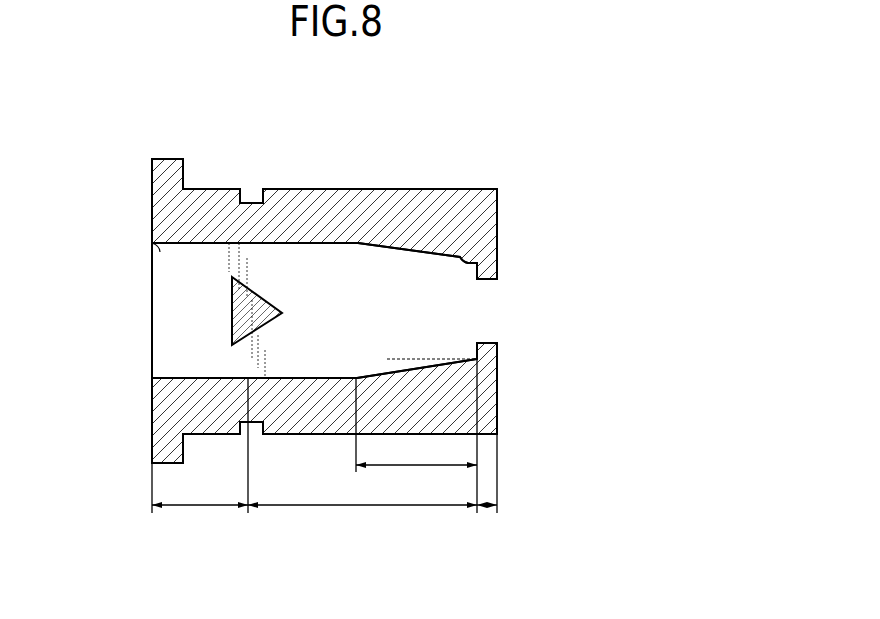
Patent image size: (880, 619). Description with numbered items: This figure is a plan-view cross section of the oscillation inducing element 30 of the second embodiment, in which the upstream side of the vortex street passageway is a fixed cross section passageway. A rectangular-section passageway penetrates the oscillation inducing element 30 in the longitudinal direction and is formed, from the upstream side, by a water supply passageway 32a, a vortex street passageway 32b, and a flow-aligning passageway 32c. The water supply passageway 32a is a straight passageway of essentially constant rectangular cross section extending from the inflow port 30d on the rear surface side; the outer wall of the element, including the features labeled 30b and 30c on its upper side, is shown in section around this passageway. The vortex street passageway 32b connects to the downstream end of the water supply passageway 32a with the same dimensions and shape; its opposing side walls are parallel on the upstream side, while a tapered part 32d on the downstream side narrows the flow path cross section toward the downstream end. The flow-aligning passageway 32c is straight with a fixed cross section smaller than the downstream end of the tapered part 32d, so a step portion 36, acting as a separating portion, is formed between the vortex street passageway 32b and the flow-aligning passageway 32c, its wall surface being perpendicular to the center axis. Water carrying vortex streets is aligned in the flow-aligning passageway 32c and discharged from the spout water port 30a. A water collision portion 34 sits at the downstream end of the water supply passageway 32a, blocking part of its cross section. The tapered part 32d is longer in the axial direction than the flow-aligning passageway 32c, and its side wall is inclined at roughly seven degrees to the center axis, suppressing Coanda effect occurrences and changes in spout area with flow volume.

The oscillation inducing element 30 is at (517, 150).
The spout water port 30a is at (488, 343).
The flange 30b is at (168, 158).
The groove 30c is at (254, 188).
The inflow port 30d is at (150, 257).
The water supply passageway 32a is at (200, 506).
The vortex street passageway 32b is at (362, 506).
The flow-aligning passageway 32c is at (487, 506).
The tapered part 32d is at (416, 434).
The water collision portion 34 is at (264, 294).
The step portion 36 is at (459, 257).